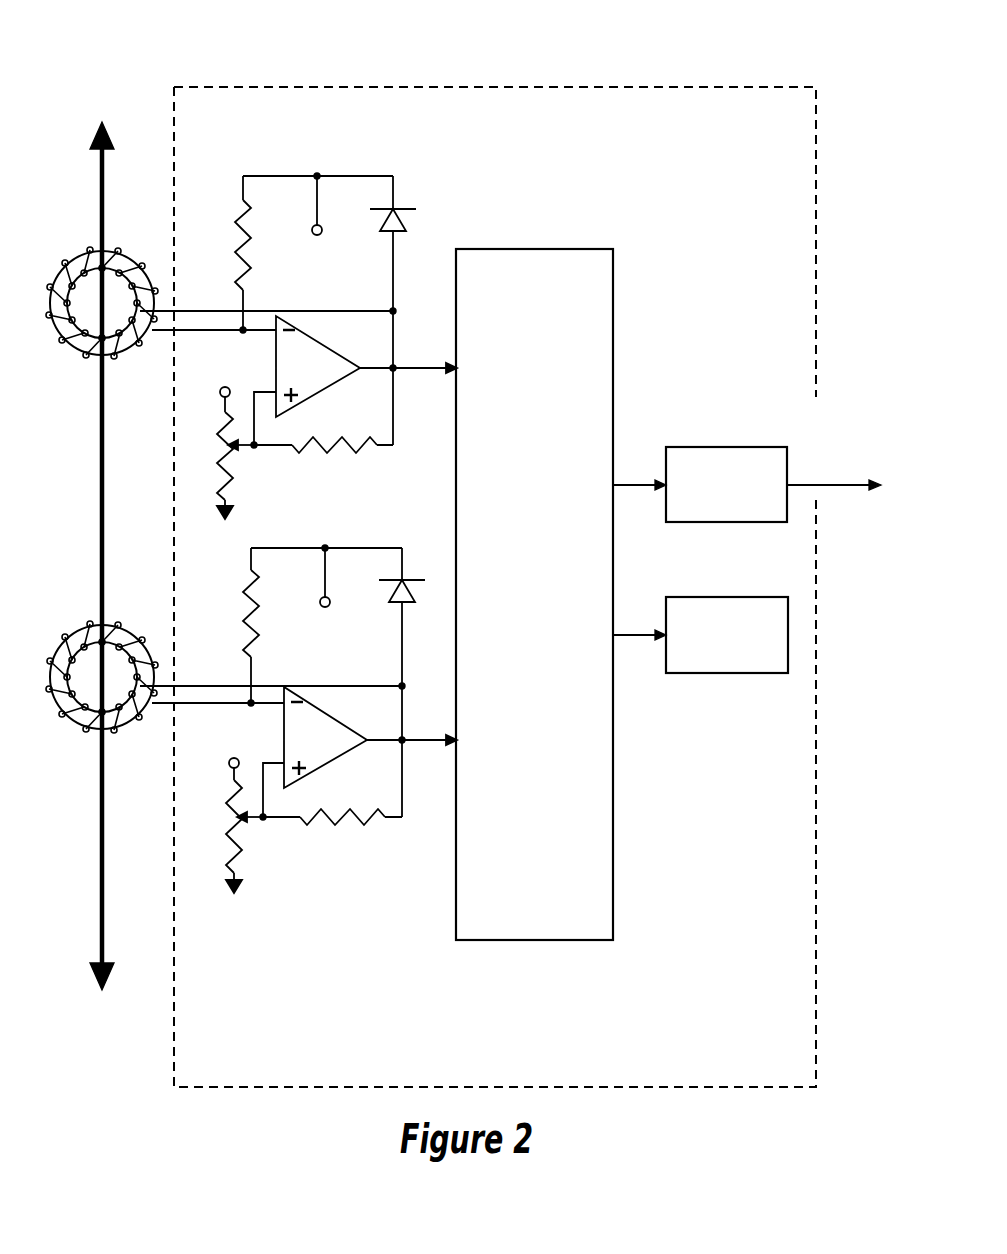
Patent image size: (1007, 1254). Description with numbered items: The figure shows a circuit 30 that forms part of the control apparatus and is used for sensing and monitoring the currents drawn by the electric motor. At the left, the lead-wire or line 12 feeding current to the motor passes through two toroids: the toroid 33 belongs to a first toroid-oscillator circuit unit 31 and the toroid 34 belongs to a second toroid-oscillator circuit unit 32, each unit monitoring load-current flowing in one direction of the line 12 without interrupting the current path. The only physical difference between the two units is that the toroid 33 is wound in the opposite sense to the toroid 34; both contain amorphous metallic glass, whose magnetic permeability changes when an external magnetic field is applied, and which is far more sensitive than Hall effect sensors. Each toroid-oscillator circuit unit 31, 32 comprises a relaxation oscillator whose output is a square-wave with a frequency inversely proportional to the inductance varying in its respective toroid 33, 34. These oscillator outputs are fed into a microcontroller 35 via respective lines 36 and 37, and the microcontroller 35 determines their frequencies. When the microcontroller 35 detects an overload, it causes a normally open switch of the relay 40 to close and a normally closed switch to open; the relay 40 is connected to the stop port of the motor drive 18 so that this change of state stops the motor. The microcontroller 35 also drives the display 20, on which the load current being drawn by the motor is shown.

The line 12 is at (105, 413).
The motor drive 18 is at (839, 461).
The display 20 is at (700, 596).
The circuit 30 is at (670, 82).
The toroid-oscillator circuit unit 31 is at (297, 165).
The toroid-oscillator circuit unit 32 is at (238, 581).
The toroid 33 is at (128, 254).
The toroid 34 is at (130, 628).
The microcontroller 35 is at (548, 483).
The line 36 is at (408, 362).
The line 37 is at (412, 733).
The relay 40 is at (718, 457).